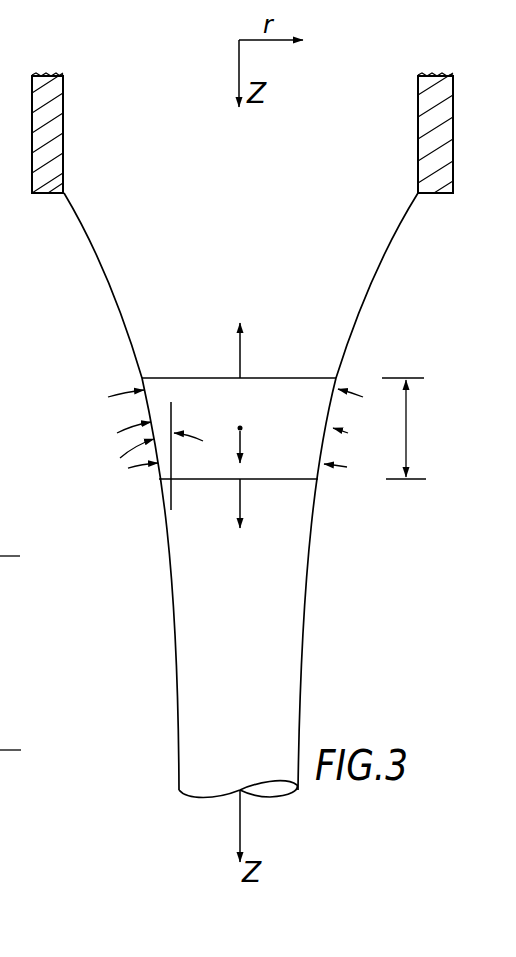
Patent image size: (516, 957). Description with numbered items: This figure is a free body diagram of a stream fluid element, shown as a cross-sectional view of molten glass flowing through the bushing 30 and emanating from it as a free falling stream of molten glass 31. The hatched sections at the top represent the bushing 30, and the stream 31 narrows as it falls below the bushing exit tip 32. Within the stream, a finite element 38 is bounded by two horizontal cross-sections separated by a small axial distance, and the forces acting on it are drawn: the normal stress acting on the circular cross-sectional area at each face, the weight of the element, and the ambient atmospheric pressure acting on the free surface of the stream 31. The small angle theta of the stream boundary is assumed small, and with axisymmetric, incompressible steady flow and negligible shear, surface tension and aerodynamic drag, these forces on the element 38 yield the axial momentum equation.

The bushing 30 is at (453, 155).
The free falling stream of molten glass 31 is at (173, 607).
The bushing exit tip 32 is at (46, 193).
The finite element 38 is at (273, 453).